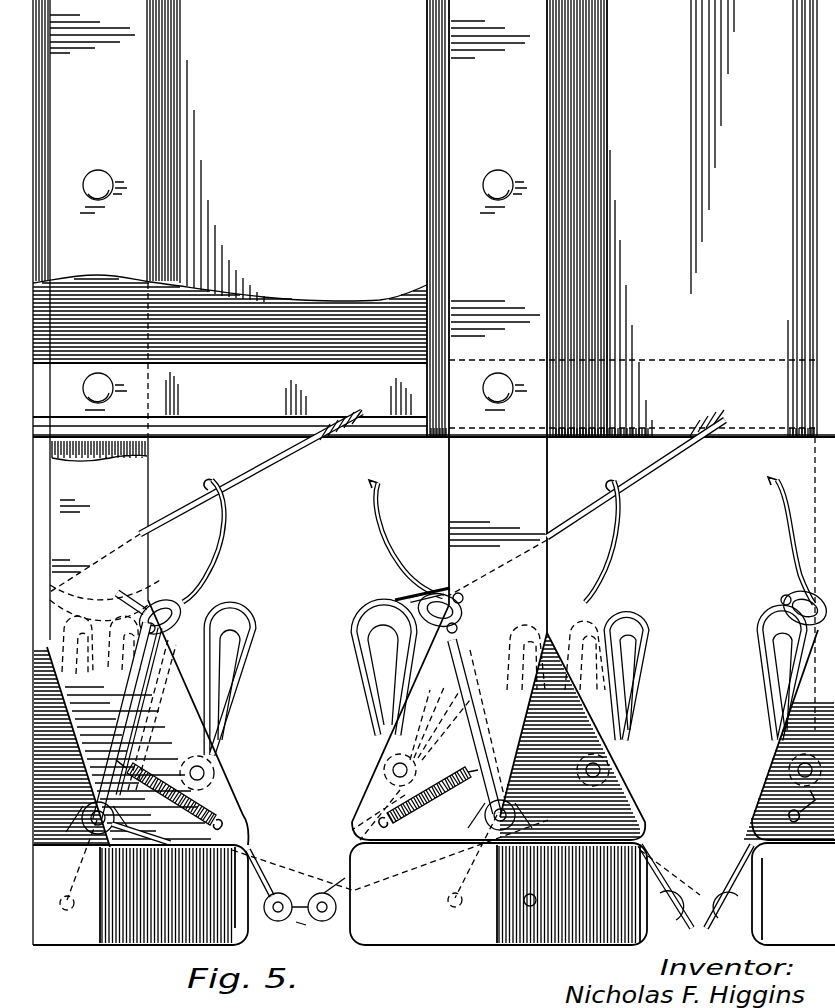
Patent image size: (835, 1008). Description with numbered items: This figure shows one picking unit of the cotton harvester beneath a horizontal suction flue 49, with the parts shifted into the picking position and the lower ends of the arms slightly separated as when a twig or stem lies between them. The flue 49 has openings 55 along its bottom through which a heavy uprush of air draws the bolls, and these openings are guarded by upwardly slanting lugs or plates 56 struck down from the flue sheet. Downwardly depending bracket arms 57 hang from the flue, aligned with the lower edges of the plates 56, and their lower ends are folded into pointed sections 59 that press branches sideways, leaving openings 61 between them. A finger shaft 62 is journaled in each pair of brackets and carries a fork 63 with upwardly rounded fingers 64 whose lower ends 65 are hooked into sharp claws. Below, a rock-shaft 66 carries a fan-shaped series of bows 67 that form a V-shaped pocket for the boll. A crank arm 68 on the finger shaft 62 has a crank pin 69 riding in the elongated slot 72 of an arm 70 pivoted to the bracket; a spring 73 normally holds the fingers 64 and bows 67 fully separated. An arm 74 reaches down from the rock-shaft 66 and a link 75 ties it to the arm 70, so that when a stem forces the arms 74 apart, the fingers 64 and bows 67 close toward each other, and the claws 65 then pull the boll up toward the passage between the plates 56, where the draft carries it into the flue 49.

The flue 49 is at (426, 218).
The openings 55 is at (187, 436).
The lugs or plates 56 is at (241, 492).
The bracket arm 57 is at (299, 535).
The pointed section 59 is at (88, 940).
The openings 61 is at (302, 828).
The finger shaft 62 is at (148, 600).
The fork 63 is at (94, 600).
The fingers 64 is at (222, 546).
The hooked lower ends 65 is at (216, 478).
The rock-shaft 66 is at (204, 773).
The bows 67 is at (222, 618).
The crank arm 68 is at (152, 598).
The crank pin 69 is at (156, 612).
The arm 70 is at (130, 718).
The elongated slot 72 is at (412, 598).
The spring 73 is at (170, 790).
The arm 74 is at (276, 892).
The link 75 is at (96, 850).